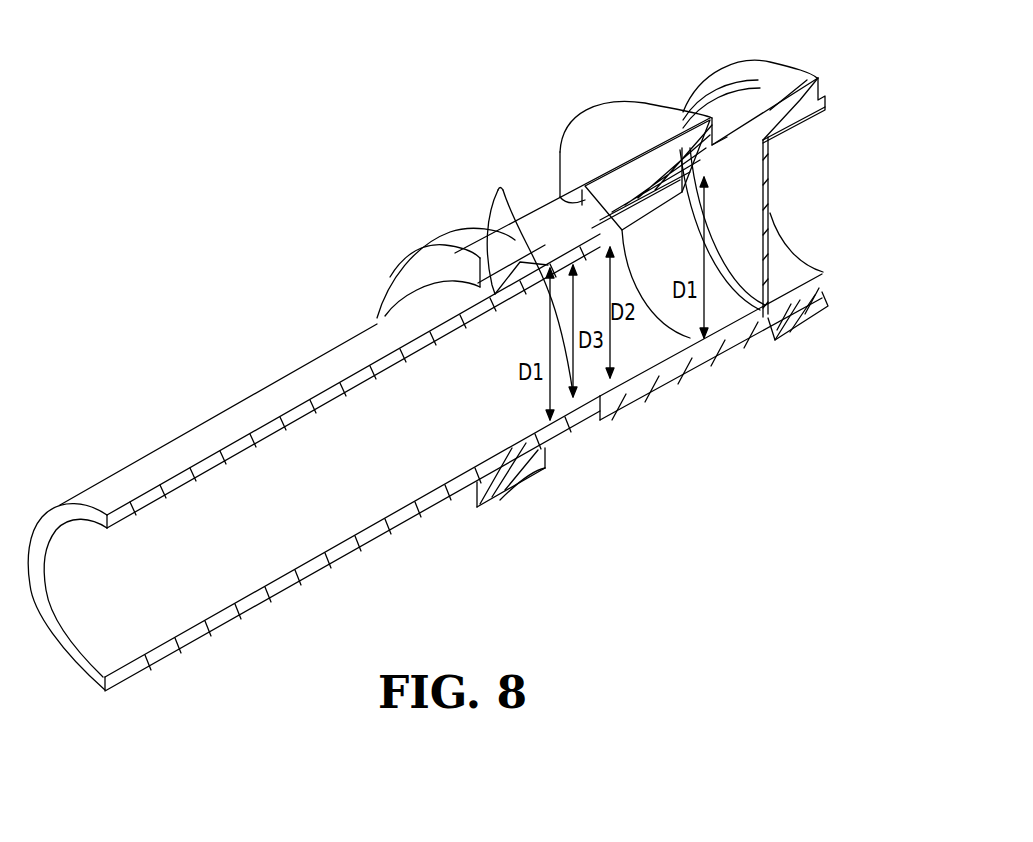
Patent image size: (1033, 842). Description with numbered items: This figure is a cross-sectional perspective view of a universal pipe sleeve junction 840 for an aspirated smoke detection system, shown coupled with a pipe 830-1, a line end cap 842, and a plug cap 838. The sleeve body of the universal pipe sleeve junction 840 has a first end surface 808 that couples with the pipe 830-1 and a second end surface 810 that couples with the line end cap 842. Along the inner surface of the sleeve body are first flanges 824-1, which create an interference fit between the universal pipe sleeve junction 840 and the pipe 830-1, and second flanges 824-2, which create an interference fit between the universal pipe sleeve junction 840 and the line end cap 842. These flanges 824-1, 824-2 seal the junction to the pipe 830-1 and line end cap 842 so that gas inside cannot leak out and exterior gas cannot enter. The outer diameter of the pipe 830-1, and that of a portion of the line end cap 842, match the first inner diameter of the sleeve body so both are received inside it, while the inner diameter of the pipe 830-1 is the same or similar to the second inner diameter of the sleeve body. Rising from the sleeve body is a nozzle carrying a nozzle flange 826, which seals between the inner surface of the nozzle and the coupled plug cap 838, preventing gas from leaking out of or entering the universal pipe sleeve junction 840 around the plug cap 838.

The first end surface 808 is at (417, 277).
The second end surface 810 is at (822, 83).
The first flanges 824-1 is at (538, 252).
The second flanges 824-2 is at (765, 115).
The nozzle flange 826 is at (610, 150).
The pipe 830-1 is at (297, 587).
The plug cap 838 is at (625, 112).
The universal pipe sleeve junction 840 is at (543, 190).
The line end cap 842 is at (780, 222).